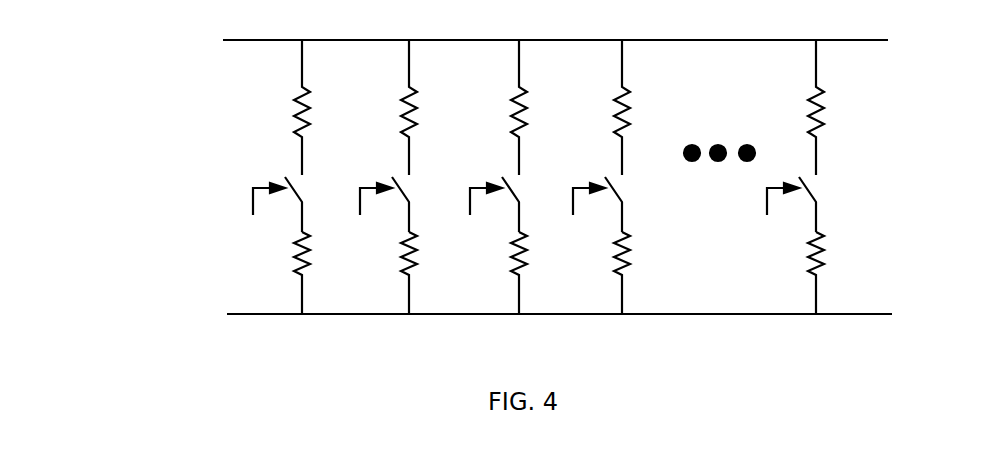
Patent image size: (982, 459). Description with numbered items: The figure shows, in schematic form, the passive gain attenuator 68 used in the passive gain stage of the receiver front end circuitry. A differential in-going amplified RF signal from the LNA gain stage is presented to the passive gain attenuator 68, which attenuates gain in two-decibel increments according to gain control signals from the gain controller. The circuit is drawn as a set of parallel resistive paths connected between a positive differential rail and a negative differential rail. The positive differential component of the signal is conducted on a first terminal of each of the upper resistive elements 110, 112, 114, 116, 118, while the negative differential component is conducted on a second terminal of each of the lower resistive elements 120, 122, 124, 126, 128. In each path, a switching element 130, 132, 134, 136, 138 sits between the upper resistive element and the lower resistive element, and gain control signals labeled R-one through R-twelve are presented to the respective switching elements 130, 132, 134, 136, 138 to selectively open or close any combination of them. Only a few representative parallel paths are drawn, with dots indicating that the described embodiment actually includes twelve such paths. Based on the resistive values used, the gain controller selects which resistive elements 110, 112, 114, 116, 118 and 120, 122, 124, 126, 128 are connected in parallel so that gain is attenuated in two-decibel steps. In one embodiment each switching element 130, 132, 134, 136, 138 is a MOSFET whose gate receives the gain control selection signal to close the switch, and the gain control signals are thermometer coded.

The passive gain attenuator 68 is at (100, 252).
The resistive element 110 is at (266, 107).
The resistive element 112 is at (391, 107).
The resistive element 114 is at (501, 107).
The resistive element 116 is at (603, 107).
The resistive element 118 is at (797, 107).
The switching element 130 is at (305, 171).
The switching element 132 is at (413, 171).
The switching element 134 is at (521, 173).
The switching element 136 is at (624, 171).
The switching element 138 is at (817, 173).
The resistive element 120 is at (270, 271).
The resistive element 122 is at (378, 271).
The resistive element 124 is at (489, 271).
The resistive element 126 is at (590, 271).
The resistive element 128 is at (785, 271).